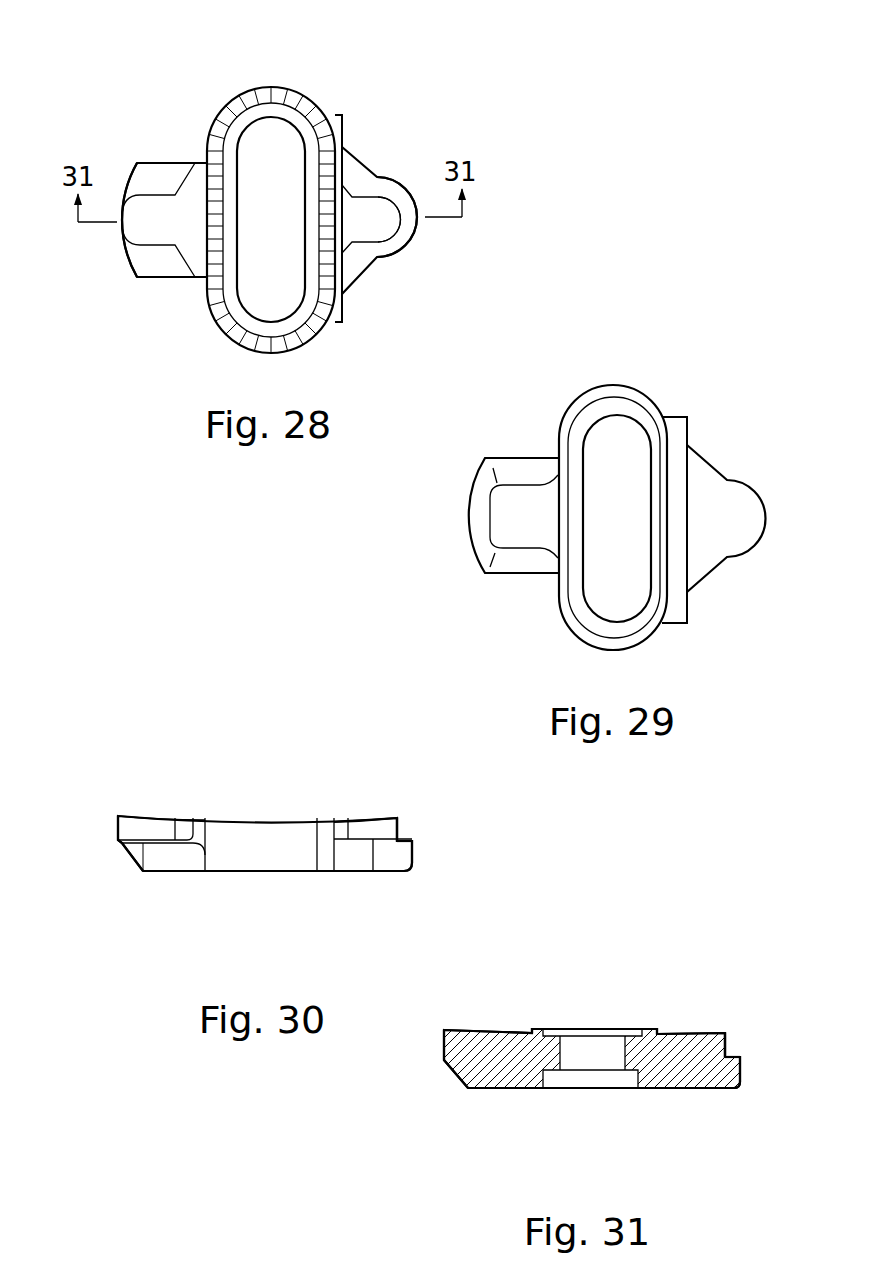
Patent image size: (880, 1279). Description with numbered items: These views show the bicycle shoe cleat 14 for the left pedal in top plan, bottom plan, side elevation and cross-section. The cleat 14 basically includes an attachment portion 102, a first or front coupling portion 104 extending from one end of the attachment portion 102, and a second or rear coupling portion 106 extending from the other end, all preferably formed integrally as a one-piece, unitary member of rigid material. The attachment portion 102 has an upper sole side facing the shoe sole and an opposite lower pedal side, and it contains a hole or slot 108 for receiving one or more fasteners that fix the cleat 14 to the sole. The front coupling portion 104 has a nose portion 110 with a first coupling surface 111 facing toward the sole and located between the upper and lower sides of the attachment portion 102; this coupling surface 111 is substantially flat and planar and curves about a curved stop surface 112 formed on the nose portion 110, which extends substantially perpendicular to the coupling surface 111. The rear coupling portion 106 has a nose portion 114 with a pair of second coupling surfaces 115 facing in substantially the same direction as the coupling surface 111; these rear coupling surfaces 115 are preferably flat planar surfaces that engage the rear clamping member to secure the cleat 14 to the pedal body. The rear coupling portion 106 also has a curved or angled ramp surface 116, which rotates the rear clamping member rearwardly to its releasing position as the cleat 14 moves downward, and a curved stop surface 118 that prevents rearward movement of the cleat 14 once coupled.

In FIG. 28, the bicycle shoe cleat 14 is at (358, 90).
In FIG. 29, the bicycle shoe cleat 14 is at (707, 390).
In FIG. 30, the bicycle shoe cleat 14 is at (380, 752).
In FIG. 31, the bicycle shoe cleat 14 is at (698, 970).
In FIG. 28, the attachment portion 102 is at (300, 90).
In FIG. 29, the attachment portion 102 is at (620, 382).
In FIG. 30, the attachment portion 102 is at (267, 820).
In FIG. 31, the attachment portion 102 is at (650, 1028).
In FIG. 28, the first coupling portion 104 is at (378, 175).
In FIG. 29, the first coupling portion 104 is at (727, 477).
In FIG. 30, the first coupling portion 104 is at (388, 817).
In FIG. 31, the first coupling portion 104 is at (715, 1033).
In FIG. 28, the second coupling portion 106 is at (152, 160).
In FIG. 29, the second coupling portion 106 is at (510, 455).
In FIG. 30, the second coupling portion 106 is at (140, 815).
In FIG. 31, the second coupling portion 106 is at (467, 1028).
In FIG. 28, the slot 108 is at (240, 143).
In FIG. 29, the slot 108 is at (612, 417).
In FIG. 31, the slot 108 is at (562, 1057).
In FIG. 28, the nose portion 110 is at (378, 246).
In FIG. 30, the nose portion 110 is at (373, 818).
In FIG. 28, the first coupling surface 111 is at (402, 237).
In FIG. 30, the first coupling surface 111 is at (405, 838).
In FIG. 31, the first coupling surface 111 is at (733, 1055).
In FIG. 28, the curved stop surface 112 is at (400, 217).
In FIG. 30, the curved stop surface 112 is at (402, 818).
In FIG. 31, the curved stop surface 112 is at (725, 1040).
In FIG. 28, the nose portion 114 is at (145, 195).
In FIG. 30, the nose portion 114 is at (155, 818).
In FIG. 28, the second coupling surfaces 115 is at (170, 180).
In FIG. 30, the second coupling surfaces 115 is at (147, 837).
In FIG. 29, the ramp surface 116 is at (508, 563).
In FIG. 30, the ramp surface 116 is at (173, 858).
In FIG. 31, the ramp surface 116 is at (452, 1073).
In FIG. 28, the curved stop surface 118 is at (123, 223).
In FIG. 30, the curved stop surface 118 is at (117, 825).
In FIG. 31, the curved stop surface 118 is at (443, 1040).